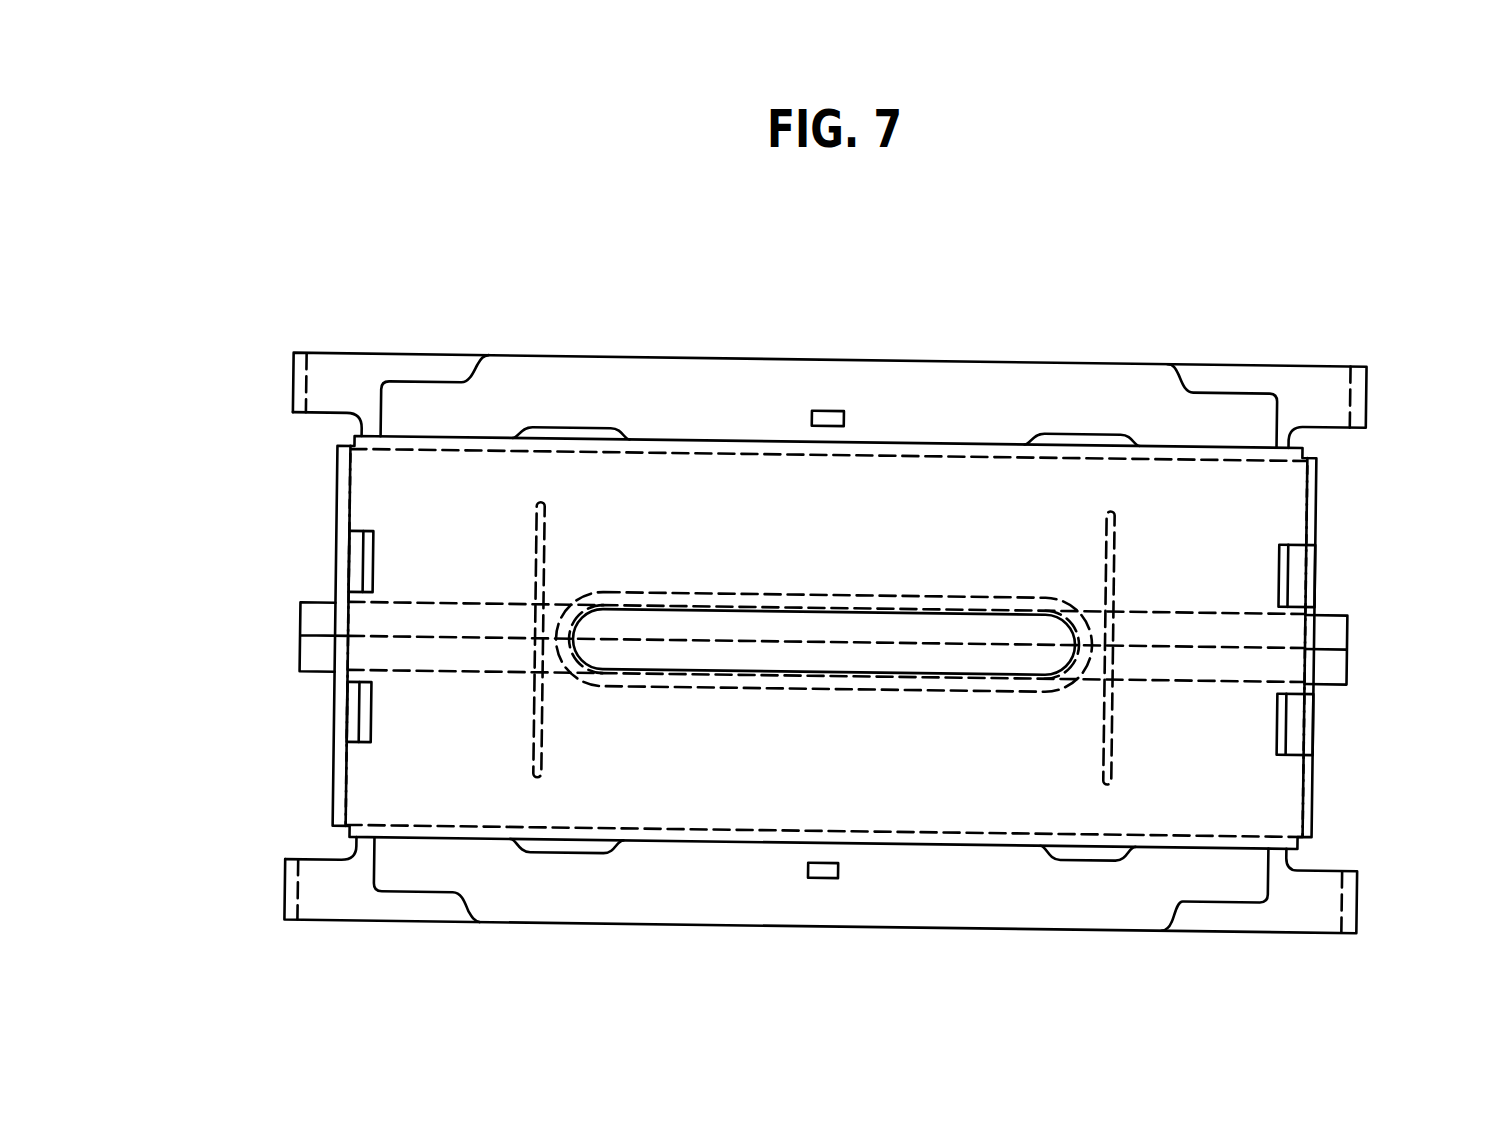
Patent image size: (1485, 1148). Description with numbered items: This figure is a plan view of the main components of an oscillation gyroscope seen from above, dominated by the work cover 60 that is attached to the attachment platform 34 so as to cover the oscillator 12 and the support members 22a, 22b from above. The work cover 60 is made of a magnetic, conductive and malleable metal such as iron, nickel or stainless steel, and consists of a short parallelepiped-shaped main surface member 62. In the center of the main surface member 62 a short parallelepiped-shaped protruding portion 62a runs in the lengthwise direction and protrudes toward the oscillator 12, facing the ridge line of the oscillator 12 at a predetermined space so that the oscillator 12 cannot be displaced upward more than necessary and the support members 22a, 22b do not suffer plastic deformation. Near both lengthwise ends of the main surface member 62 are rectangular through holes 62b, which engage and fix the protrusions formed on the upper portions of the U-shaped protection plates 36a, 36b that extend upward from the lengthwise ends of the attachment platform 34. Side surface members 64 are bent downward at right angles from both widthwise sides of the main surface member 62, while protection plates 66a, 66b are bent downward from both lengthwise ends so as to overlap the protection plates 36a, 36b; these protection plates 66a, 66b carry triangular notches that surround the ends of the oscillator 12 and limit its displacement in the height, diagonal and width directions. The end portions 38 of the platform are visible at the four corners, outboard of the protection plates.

The oscillator 12 is at (1357, 615).
The support member 22a is at (545, 562).
The support member 22b is at (1098, 565).
The attachment platform 34 is at (418, 371).
The protection plate 36a is at (358, 568).
The protection plate 36b is at (1316, 569).
The mounting portion 38 is at (287, 382).
The work cover 60 is at (922, 486).
The main surface member 62 is at (932, 799).
The protruding portion 62a is at (802, 625).
The through hole 62b is at (373, 571).
The side surface member 64 is at (709, 449).
The protection plate 66a is at (336, 796).
The protection plate 66b is at (1319, 797).